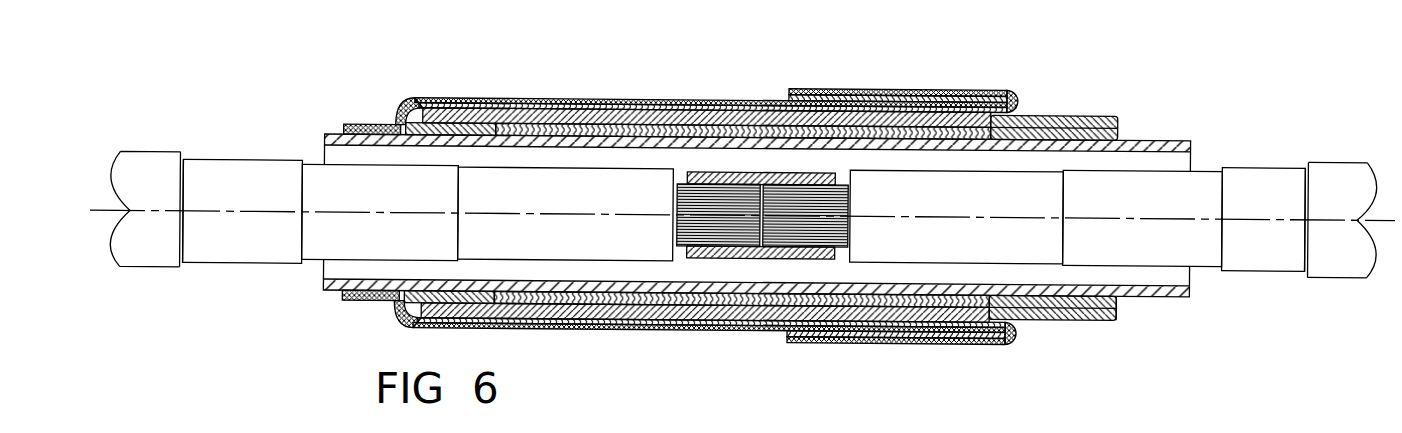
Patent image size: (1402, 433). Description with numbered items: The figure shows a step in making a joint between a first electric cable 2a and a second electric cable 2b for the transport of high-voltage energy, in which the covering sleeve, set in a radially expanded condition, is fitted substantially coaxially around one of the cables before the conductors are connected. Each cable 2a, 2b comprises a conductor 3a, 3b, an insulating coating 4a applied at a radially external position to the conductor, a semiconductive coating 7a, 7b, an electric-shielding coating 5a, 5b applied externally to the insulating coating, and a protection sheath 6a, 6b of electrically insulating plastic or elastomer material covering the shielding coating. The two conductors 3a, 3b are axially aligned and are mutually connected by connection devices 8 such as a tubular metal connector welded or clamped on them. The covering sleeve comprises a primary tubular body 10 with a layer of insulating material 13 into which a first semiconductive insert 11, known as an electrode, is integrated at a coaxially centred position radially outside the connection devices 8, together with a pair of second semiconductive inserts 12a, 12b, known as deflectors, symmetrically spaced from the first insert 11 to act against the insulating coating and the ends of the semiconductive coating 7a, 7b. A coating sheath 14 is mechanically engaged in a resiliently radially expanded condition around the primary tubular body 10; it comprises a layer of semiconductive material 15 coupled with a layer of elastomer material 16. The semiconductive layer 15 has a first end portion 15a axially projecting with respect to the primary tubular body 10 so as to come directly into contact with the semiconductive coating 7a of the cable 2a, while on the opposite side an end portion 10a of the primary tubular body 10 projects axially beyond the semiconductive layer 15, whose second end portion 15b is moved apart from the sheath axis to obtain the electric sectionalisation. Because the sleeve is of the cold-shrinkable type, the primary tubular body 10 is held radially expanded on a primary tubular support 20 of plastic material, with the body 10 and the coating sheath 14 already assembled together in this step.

The first electric cable 2a is at (166, 146).
The second electric cable 2b is at (1351, 146).
The conductor 3a is at (706, 200).
The conductor 3b is at (783, 195).
The insulating coating 4a is at (580, 240).
The electric-shielding coating 5a is at (237, 182).
The electric-shielding coating 5b is at (1267, 250).
The protection sheath 6a is at (147, 258).
The protection sheath 6b is at (1320, 180).
The semiconductive coating 7a is at (317, 237).
The semiconductive coating 7b is at (1200, 200).
The connection devices 8 is at (757, 262).
The primary tubular body 10 is at (1127, 322).
The end portion of the primary tubular body 10a is at (1067, 317).
The first semiconductive insert 11 is at (836, 130).
The second semiconductive insert 12a is at (461, 99).
The second semiconductive insert 12b is at (1062, 137).
The layer of insulating material 13 is at (968, 130).
The coating sheath 14 is at (336, 300).
The layer of semiconductive material 15 is at (513, 100).
The first end portion 15a is at (345, 127).
The second end portion 15b is at (911, 88).
The layer of elastomer material 16 is at (583, 109).
The primary tubular support 20 is at (1153, 163).